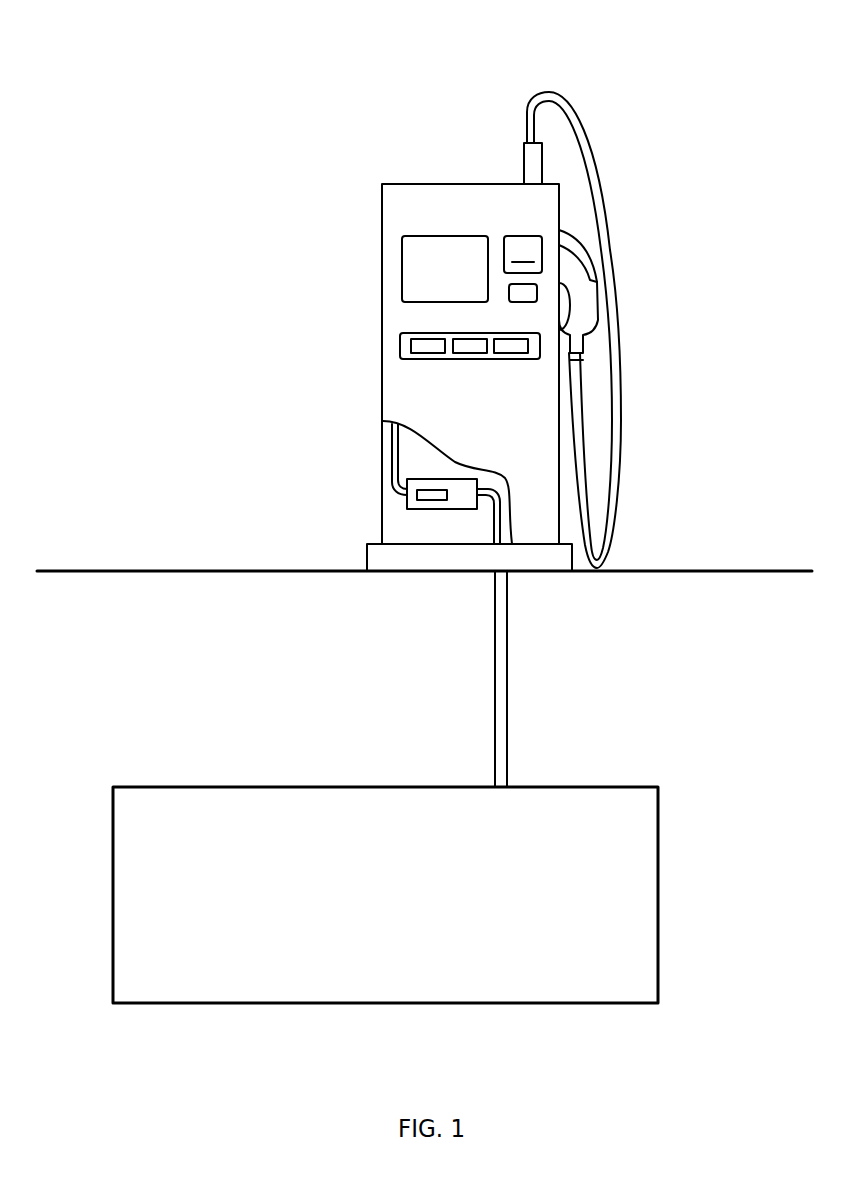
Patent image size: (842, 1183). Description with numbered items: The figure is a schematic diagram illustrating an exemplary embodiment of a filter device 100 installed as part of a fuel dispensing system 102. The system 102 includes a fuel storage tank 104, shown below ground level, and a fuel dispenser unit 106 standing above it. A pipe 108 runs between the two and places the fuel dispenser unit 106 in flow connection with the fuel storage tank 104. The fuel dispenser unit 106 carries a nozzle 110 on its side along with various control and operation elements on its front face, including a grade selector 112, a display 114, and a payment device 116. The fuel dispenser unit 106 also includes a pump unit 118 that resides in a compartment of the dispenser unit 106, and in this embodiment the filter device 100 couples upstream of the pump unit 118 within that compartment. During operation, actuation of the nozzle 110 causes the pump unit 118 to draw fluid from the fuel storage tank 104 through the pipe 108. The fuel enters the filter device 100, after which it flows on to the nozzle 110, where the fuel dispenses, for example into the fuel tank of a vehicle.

The filter device 100 is at (431, 530).
The fuel dispensing system 102 is at (252, 62).
The fuel storage tank 104 is at (418, 931).
The fuel dispenser unit 106 is at (340, 215).
The pipe 108 is at (508, 673).
The nozzle 110 is at (598, 308).
The grade selector 112 is at (400, 345).
The display 114 is at (531, 236).
The payment device 116 is at (420, 236).
The pump unit 118 is at (393, 500).